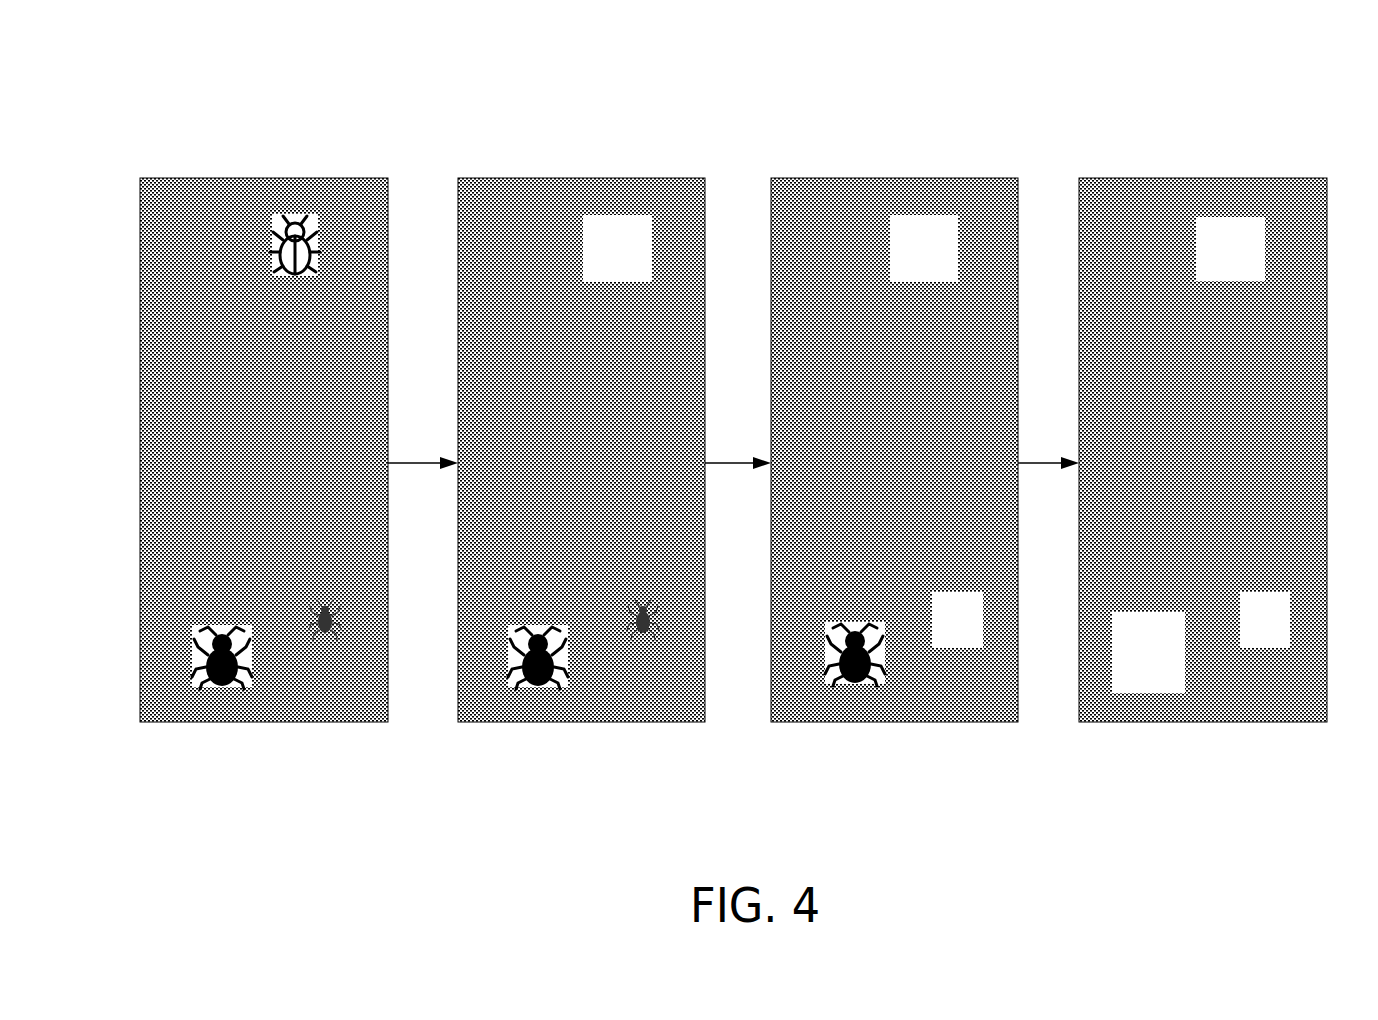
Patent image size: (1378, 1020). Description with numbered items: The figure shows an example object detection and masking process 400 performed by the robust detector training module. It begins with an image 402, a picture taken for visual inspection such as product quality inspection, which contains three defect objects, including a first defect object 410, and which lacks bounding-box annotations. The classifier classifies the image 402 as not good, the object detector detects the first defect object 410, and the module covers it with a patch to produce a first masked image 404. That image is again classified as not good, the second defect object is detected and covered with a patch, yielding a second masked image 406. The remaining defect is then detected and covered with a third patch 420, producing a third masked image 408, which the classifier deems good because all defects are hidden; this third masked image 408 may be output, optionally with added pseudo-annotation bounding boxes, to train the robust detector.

The sequence of image frames 400 is at (1240, 78).
The image 402 is at (195, 178).
The first masked image 404 is at (491, 178).
The second masked image 406 is at (826, 178).
The third masked image 408 is at (1130, 178).
The first defect object 410 is at (293, 222).
The third patch 420 is at (1153, 650).